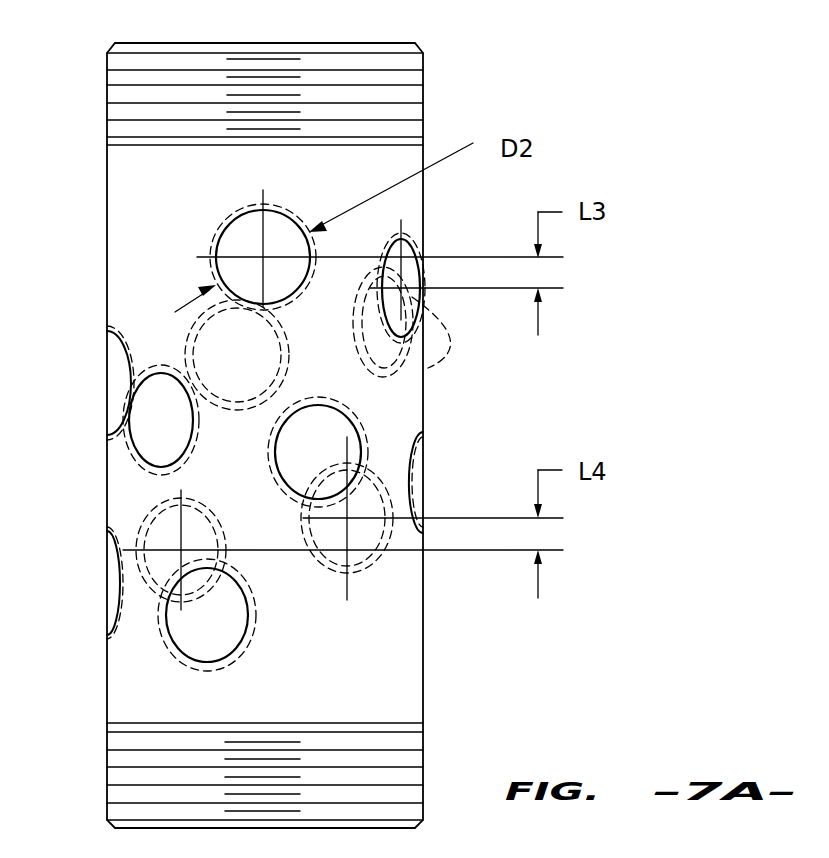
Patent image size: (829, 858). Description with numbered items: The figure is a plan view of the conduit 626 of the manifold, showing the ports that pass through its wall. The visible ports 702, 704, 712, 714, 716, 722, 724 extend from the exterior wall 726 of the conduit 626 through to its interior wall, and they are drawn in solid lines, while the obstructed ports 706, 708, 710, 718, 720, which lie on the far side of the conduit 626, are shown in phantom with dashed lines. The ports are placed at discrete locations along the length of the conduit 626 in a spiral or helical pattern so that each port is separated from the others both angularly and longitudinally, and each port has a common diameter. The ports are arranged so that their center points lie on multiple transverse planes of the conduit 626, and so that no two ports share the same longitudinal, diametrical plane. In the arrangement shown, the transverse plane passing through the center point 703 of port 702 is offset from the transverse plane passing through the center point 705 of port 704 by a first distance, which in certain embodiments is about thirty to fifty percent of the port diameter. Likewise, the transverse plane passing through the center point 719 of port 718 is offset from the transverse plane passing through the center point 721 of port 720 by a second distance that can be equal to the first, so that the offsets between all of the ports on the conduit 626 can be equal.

The conduit 626 is at (472, 83).
The port 702 is at (257, 250).
The center point of port 702 703 is at (243, 234).
The port 704 is at (408, 256).
The center point of port 704 705 is at (424, 258).
The obstructed port 706 is at (418, 322).
The obstructed port 708 is at (192, 336).
The obstructed port 710 is at (114, 350).
The port 712 is at (130, 447).
The port 714 is at (357, 427).
The port 716 is at (420, 474).
The obstructed port 718 is at (372, 545).
The center point of port 718 719 is at (352, 578).
The obstructed port 720 is at (143, 527).
The center point of port 720 721 is at (155, 505).
The port 722 is at (108, 560).
The port 724 is at (167, 637).
The exterior wall 726 is at (387, 660).